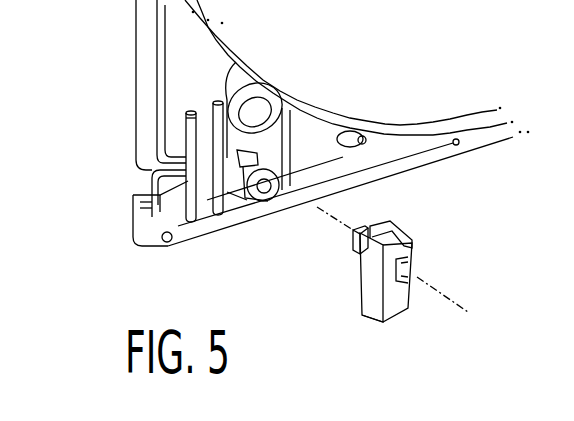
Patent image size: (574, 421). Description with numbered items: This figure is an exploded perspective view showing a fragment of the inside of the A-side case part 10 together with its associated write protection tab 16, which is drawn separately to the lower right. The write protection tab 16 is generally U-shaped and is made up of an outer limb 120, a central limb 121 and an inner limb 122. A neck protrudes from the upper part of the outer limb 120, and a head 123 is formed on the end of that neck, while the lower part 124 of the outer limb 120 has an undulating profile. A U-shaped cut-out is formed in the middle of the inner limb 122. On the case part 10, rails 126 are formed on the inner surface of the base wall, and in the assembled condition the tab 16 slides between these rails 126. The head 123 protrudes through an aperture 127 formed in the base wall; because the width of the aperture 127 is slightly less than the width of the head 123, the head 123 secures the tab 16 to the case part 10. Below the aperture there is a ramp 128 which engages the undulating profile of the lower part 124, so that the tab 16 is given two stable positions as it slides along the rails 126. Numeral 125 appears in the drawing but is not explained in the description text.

The case part 10 is at (116, 182).
The write protection tab 16 is at (381, 285).
The outer limb 120 is at (378, 223).
The central limb 121 is at (373, 262).
The inner limb 122 is at (396, 262).
The head 123 is at (348, 242).
The lower part 124 is at (383, 330).
The recess 125 is at (408, 275).
The rails 126 is at (186, 142).
The aperture 127 is at (191, 111).
The ramp 128 is at (143, 213).